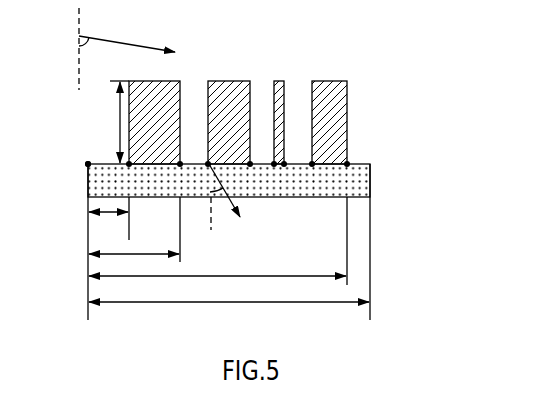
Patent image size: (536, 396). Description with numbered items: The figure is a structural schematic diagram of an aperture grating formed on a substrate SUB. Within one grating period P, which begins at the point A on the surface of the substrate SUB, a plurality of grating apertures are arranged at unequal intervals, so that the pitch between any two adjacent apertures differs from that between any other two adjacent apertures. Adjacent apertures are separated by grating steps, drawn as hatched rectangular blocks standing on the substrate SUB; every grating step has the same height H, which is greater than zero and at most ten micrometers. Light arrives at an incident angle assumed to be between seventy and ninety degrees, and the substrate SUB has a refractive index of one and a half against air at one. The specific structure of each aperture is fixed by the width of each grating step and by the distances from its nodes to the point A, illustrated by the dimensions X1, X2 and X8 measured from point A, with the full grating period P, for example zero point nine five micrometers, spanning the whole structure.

The substrate SUB is at (370, 182).
The point A is at (78, 154).
The height of grating step H is at (111, 122).
The distance between node one and point A X1 is at (108, 229).
The distance between node two and point A X2 is at (134, 245).
The distance between node eight and point A X8 is at (217, 268).
The grating period P is at (229, 316).